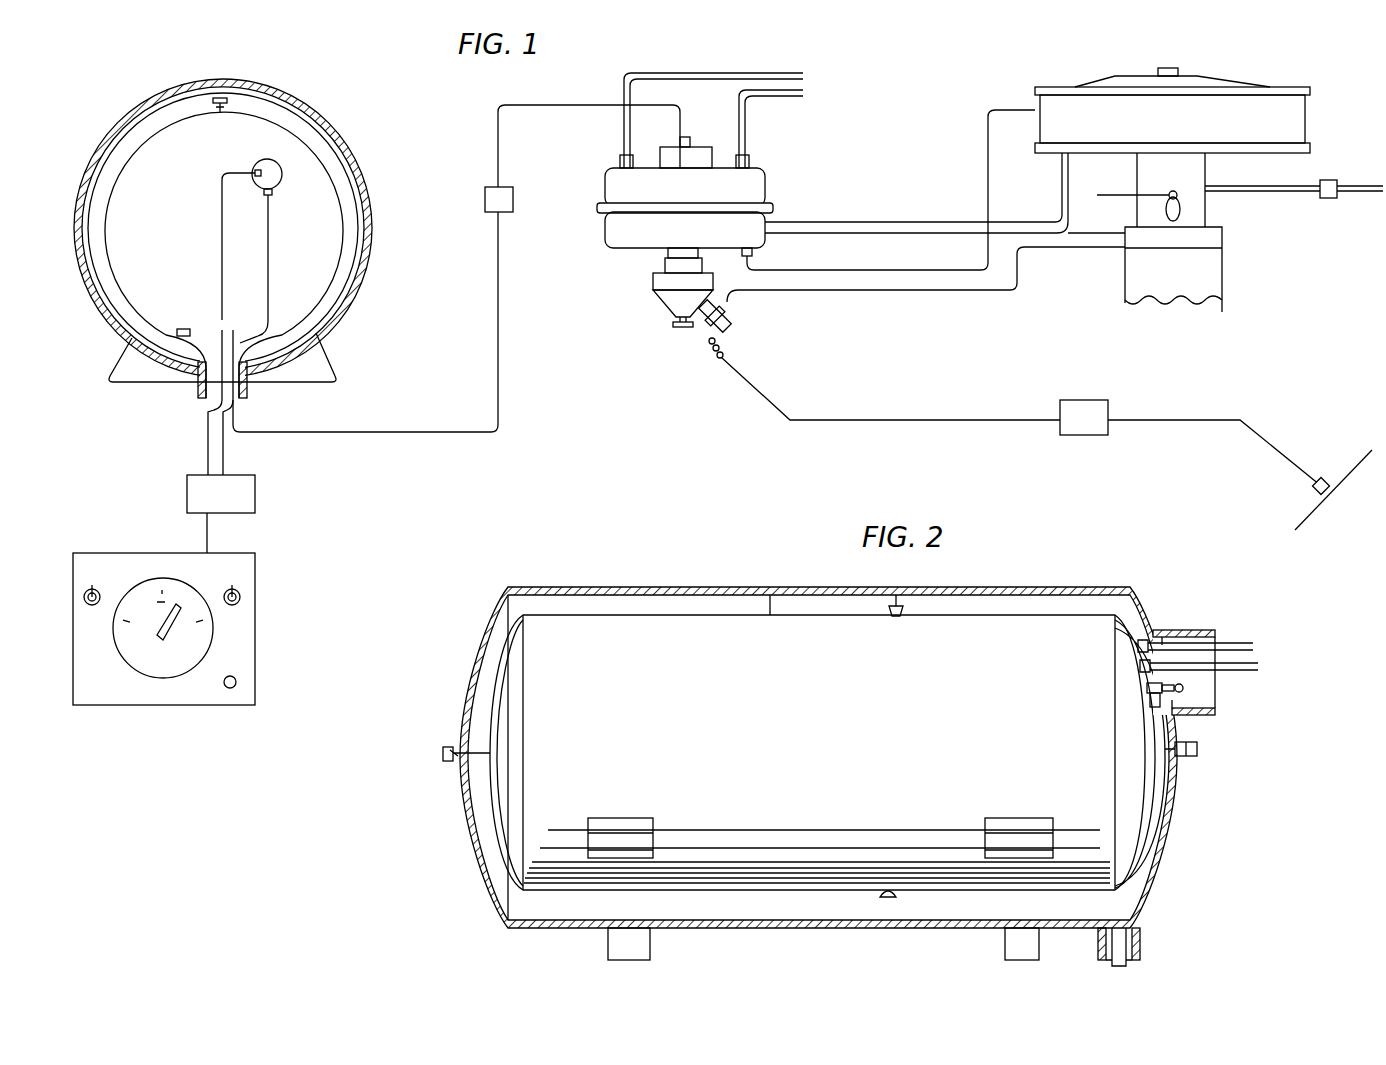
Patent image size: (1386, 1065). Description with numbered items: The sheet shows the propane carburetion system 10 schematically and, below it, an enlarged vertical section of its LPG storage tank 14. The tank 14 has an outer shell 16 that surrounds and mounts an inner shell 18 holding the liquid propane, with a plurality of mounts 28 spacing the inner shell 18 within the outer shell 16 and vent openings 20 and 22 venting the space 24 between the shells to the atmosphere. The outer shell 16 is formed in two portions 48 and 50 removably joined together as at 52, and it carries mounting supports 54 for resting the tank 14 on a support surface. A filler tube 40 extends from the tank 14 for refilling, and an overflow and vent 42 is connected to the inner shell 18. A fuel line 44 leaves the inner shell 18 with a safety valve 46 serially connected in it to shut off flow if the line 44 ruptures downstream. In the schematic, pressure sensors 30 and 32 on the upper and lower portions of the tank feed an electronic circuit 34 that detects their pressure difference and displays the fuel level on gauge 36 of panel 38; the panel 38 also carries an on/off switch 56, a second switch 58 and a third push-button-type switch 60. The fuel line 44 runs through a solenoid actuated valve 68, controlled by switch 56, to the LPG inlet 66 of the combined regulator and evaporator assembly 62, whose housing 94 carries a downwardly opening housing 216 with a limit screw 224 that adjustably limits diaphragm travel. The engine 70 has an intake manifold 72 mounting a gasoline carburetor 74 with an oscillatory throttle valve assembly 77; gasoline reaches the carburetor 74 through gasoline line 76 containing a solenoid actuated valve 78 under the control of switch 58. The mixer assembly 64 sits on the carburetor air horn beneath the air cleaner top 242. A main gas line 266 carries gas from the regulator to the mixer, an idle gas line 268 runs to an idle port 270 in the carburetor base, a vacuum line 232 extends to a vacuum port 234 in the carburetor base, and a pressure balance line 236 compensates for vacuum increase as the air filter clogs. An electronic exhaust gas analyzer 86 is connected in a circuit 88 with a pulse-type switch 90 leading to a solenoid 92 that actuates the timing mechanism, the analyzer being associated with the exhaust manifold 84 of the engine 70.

In FIG. 1, the propane carburetion system 10 is at (685, 356).
In FIG. 1, the pressure sensor 30 is at (228, 102).
In FIG. 1, the pressure sensor 32 is at (180, 336).
In FIG. 1, the electronic circuit 34 is at (250, 495).
In FIG. 1, the gauge 36 is at (150, 665).
In FIG. 1, the panel 38 is at (190, 693).
In FIG. 1, the fuel line 44 is at (428, 432).
In FIG. 2, the fuel line 44 is at (1160, 815).
In FIG. 1, the on/off switch 56 is at (240, 600).
In FIG. 1, the second switch 58 is at (85, 597).
In FIG. 1, the third push-button-type switch 60 is at (236, 683).
In FIG. 1, the combined regulator and evaporator assembly 62 is at (770, 172).
In FIG. 1, the mixer assembly 64 is at (1033, 157).
In FIG. 1, the LPG inlet 66 is at (688, 137).
In FIG. 1, the solenoid actuated valve 68 is at (486, 196).
In FIG. 1, the internal combustion engine 70 is at (1204, 236).
In FIG. 1, the intake manifold 72 is at (1212, 273).
In FIG. 1, the gasoline carburetor 74 is at (1205, 212).
In FIG. 1, the gasoline line 76 is at (1307, 186).
In FIG. 1, the oscillatory throttle valve assembly 77 is at (1178, 212).
In FIG. 1, the solenoid actuated valve 78 is at (1331, 199).
In FIG. 1, the vacuum line 84 is at (1352, 465).
In FIG. 1, the electronic exhaust gas analyzer 86 is at (1312, 491).
In FIG. 1, the circuit 88 is at (990, 420).
In FIG. 1, the pulse-type switch 90 is at (1090, 405).
In FIG. 1, the solenoid 92 is at (731, 317).
In FIG. 1, the housing 94 is at (612, 230).
In FIG. 1, the downwardly opening housing 216 is at (655, 285).
In FIG. 1, the limit screw 224 is at (676, 323).
In FIG. 1, the vacuum line 232 is at (863, 291).
In FIG. 1, the vacuum port 234 is at (1125, 248).
In FIG. 1, the pressure balance line 236 is at (827, 272).
In FIG. 1, the air cleaner top 242 is at (1105, 78).
In FIG. 1, the main gas line 266 is at (815, 220).
In FIG. 1, the idle gas line 268 is at (958, 237).
In FIG. 1, the idle port 270 is at (1122, 231).
In FIG. 2, the storage tank 14 is at (608, 587).
In FIG. 2, the outer shell 16 is at (1013, 587).
In FIG. 2, the inner shell 18 is at (669, 620).
In FIG. 2, the vent opening 20 is at (1184, 630).
In FIG. 2, the vent opening 22 is at (1142, 943).
In FIG. 2, the space 24 is at (585, 903).
In FIG. 2, the mounts 28 is at (625, 833).
In FIG. 2, the filler tube 40 is at (1238, 644).
In FIG. 2, the overflow and vent 42 is at (1236, 671).
In FIG. 2, the valve 46 is at (1192, 715).
In FIG. 2, the outer shell portion 48 is at (810, 587).
In FIG. 2, the outer shell portion 50 is at (465, 825).
In FIG. 2, the joint 52 is at (446, 747).
In FIG. 2, the mounting supports 54 is at (642, 949).